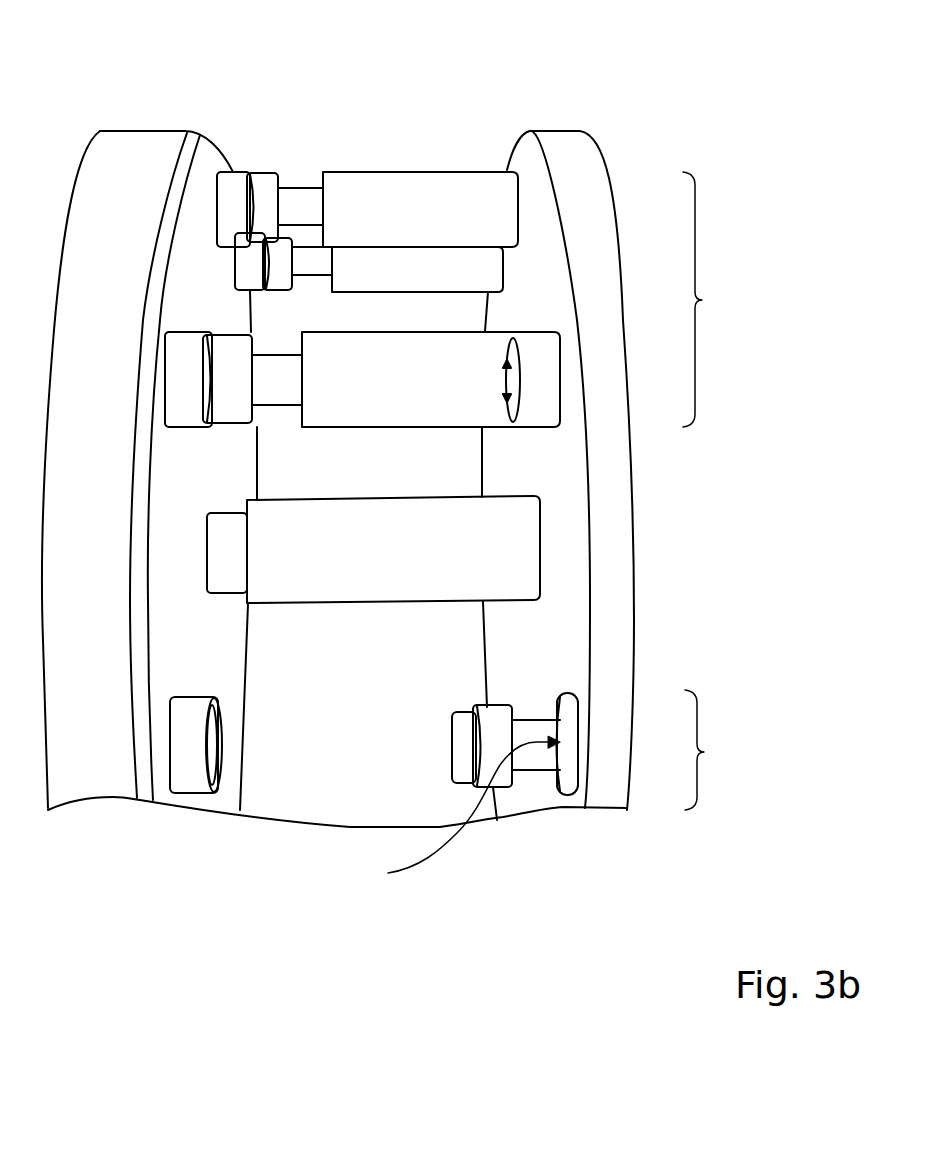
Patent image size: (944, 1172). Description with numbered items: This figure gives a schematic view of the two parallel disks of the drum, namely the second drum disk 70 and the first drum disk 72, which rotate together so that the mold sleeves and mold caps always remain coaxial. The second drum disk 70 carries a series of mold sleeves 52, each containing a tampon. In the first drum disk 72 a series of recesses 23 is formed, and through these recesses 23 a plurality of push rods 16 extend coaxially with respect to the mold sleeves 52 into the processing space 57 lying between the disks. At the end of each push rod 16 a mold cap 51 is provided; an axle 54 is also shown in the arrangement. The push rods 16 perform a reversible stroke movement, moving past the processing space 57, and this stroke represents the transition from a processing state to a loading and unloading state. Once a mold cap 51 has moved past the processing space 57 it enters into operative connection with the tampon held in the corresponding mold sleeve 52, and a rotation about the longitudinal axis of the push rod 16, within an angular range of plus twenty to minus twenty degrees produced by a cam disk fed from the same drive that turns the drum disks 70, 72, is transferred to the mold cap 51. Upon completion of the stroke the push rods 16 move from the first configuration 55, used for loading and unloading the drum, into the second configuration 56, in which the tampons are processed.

The second drum disk 70 is at (132, 170).
The first drum disk 72 is at (562, 157).
The mold sleeve 52 is at (232, 207).
The mold cap 51 is at (267, 207).
The push rod 16 is at (433, 202).
The axle 54 is at (318, 565).
The processing space 57 is at (393, 708).
The recess 23 is at (453, 816).
The second configuration 56 is at (702, 300).
The first configuration 55 is at (704, 752).